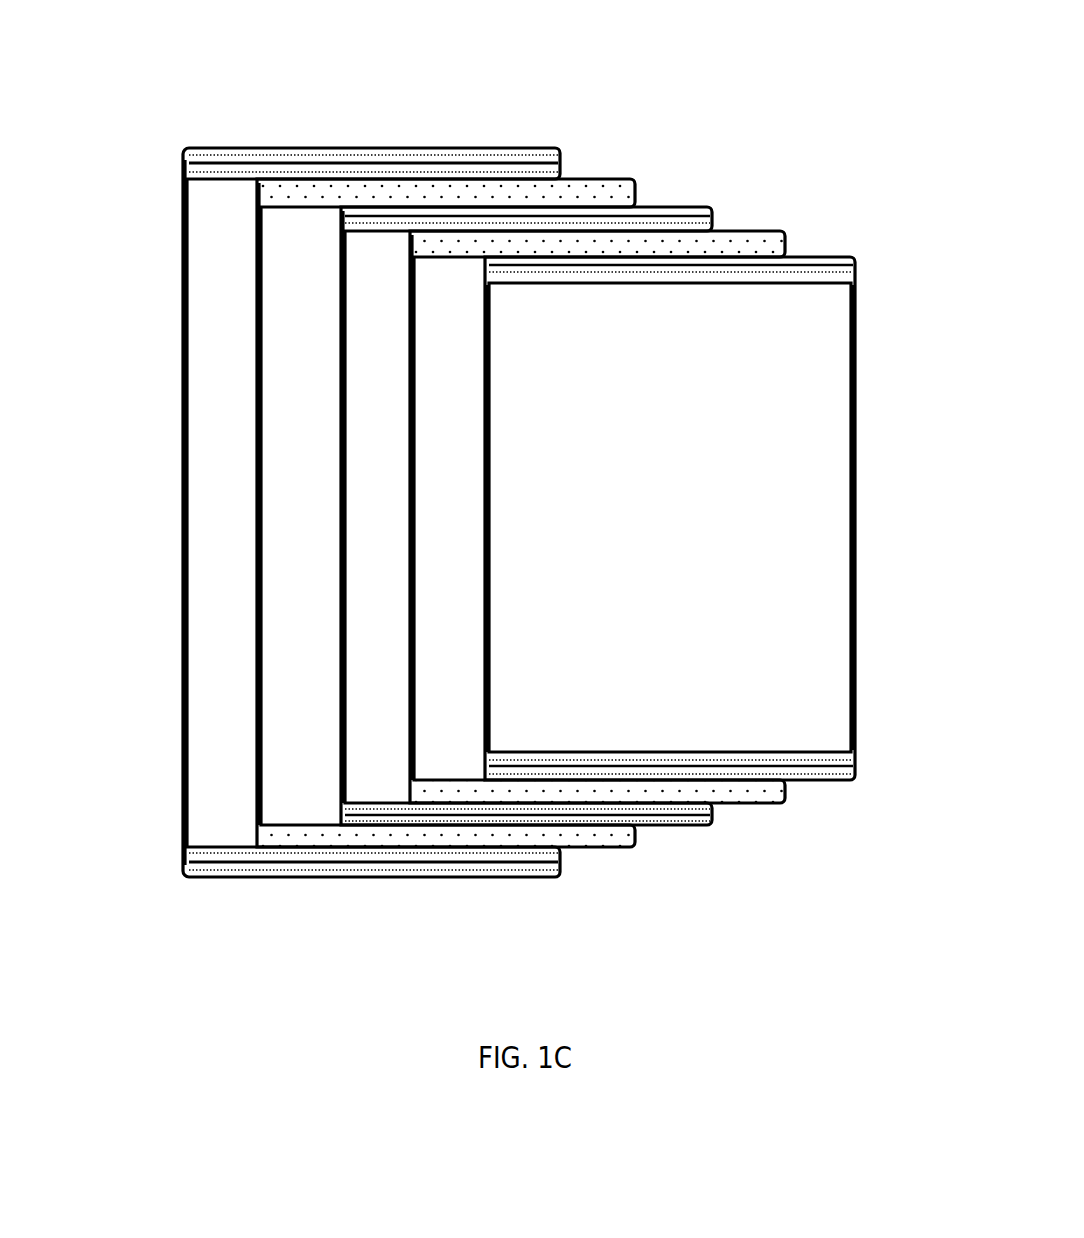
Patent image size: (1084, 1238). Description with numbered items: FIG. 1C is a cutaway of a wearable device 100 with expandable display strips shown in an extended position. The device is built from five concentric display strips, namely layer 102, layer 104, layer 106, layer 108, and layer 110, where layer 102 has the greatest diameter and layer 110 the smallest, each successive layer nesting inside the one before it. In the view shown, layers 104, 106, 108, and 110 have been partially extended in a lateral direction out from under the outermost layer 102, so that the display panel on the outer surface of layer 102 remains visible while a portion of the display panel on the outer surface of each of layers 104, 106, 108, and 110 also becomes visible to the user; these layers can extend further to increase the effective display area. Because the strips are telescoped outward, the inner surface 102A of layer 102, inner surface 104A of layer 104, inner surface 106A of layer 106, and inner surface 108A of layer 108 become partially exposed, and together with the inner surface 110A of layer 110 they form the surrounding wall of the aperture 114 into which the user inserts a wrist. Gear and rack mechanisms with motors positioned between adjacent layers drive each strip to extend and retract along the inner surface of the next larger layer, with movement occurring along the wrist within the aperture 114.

The wearable device 100 is at (501, 491).
The layer 102 is at (553, 162).
The layer 104 is at (617, 195).
The layer 106 is at (705, 218).
The layer 108 is at (775, 242).
The layer 110 is at (845, 265).
The inner surface 102A is at (225, 318).
The inner surface 104A is at (296, 440).
The inner surface 106A is at (366, 565).
The inner surface 108A is at (438, 675).
The inner surface 110A is at (714, 500).
The aperture 114 is at (183, 780).